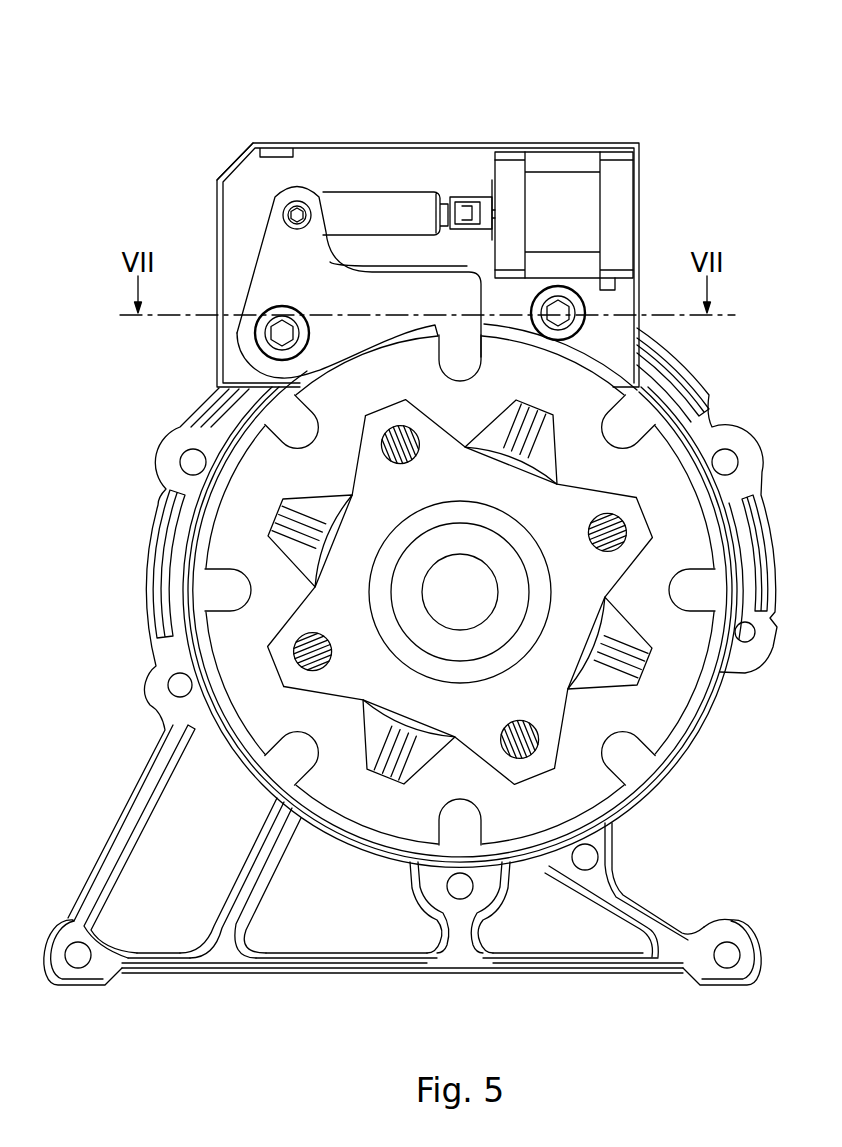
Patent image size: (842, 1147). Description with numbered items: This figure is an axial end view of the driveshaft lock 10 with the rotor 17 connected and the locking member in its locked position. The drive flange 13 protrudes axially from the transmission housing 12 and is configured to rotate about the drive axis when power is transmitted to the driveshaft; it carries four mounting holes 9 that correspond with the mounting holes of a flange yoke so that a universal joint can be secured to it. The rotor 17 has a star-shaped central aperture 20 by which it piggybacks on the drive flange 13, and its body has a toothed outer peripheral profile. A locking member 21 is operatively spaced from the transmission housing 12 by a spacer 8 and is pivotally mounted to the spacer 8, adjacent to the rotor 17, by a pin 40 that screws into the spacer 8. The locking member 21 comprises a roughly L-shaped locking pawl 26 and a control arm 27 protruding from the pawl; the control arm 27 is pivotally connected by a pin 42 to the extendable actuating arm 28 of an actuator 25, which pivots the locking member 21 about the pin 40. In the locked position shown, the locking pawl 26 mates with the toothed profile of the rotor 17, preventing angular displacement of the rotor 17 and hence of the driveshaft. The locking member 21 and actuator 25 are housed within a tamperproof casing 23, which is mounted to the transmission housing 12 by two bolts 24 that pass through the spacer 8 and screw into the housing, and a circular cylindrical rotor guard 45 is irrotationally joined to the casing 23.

The spacer 8 is at (520, 327).
The mounting holes 9 is at (412, 432).
The driveshaft lock 10 is at (707, 77).
The transmission housing 12 is at (740, 444).
The drive flange 13 is at (480, 716).
The rotor 17 is at (667, 713).
The star-shaped central aperture 20 is at (380, 735).
The locking member 21 is at (258, 262).
The tamperproof casing 23 is at (458, 142).
The bolts 24 is at (557, 305).
The actuator 25 is at (618, 200).
The locking pawl 26 is at (365, 283).
The control arm 27 is at (272, 228).
The extendable actuating arm 28 is at (389, 188).
The pin 40 is at (272, 338).
The pin 42 is at (305, 205).
The rotor guard 45 is at (460, 815).